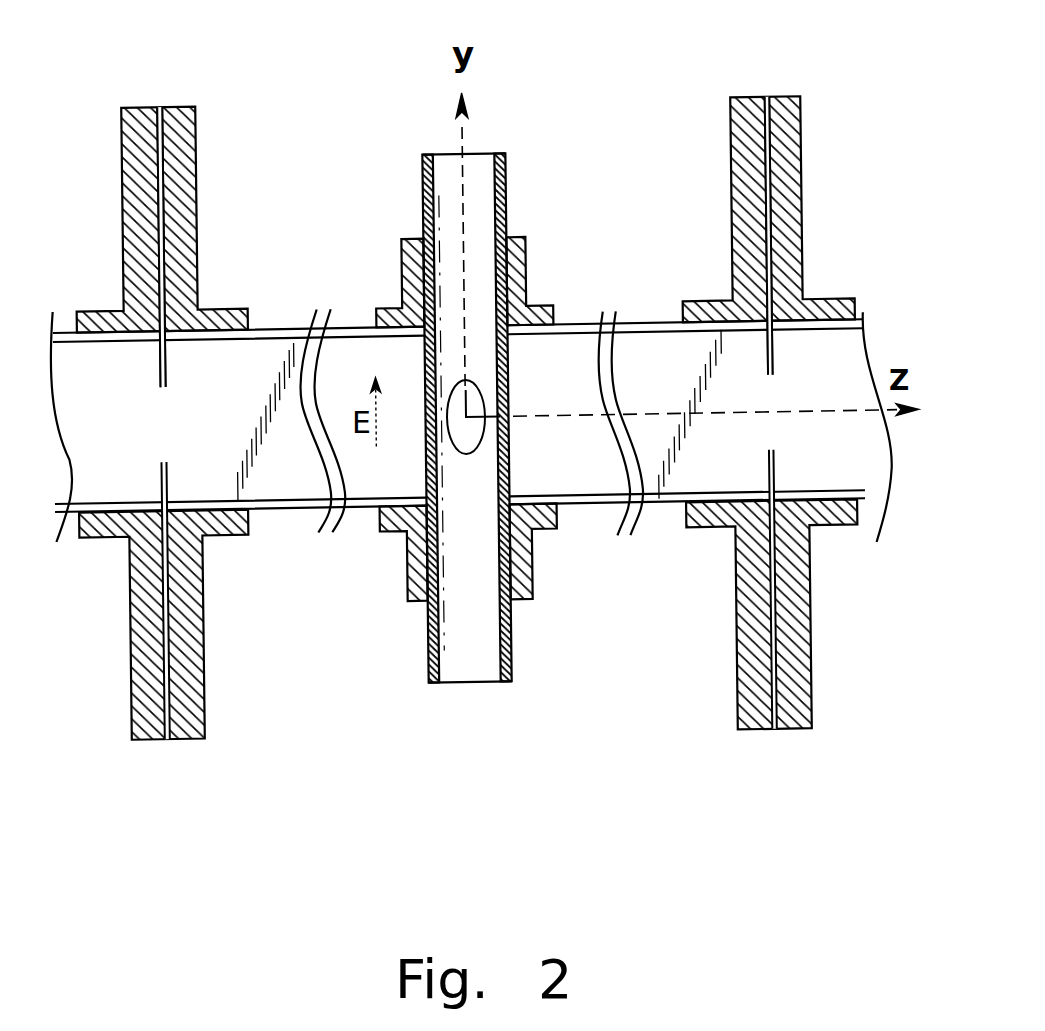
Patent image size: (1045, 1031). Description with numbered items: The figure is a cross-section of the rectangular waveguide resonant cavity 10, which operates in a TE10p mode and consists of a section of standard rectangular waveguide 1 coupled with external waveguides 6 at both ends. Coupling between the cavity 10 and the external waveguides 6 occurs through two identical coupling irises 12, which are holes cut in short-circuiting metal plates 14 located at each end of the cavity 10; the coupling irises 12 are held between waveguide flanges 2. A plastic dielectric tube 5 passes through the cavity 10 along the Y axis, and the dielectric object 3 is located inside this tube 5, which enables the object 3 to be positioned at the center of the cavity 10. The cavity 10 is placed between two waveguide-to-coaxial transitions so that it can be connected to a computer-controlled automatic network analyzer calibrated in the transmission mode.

The rectangular waveguide 1 is at (364, 511).
The waveguide flanges 2 is at (150, 645).
The dielectric object 3 is at (478, 392).
The plastic tube 5 is at (506, 201).
The external waveguides 6 is at (140, 207).
The rectangular waveguide resonant cavity 10 is at (274, 487).
The coupling irises 12 is at (160, 418).
The short-circuiting metal plates 14 is at (170, 474).